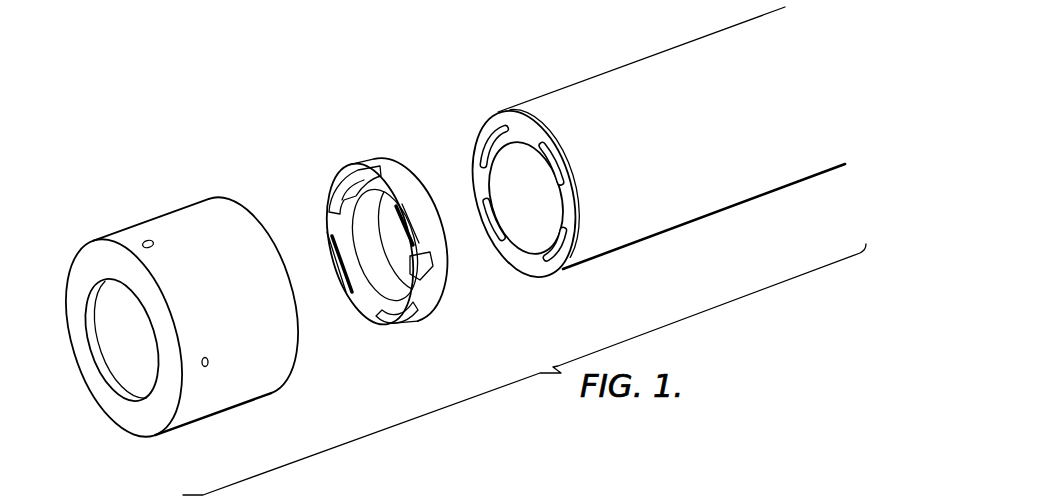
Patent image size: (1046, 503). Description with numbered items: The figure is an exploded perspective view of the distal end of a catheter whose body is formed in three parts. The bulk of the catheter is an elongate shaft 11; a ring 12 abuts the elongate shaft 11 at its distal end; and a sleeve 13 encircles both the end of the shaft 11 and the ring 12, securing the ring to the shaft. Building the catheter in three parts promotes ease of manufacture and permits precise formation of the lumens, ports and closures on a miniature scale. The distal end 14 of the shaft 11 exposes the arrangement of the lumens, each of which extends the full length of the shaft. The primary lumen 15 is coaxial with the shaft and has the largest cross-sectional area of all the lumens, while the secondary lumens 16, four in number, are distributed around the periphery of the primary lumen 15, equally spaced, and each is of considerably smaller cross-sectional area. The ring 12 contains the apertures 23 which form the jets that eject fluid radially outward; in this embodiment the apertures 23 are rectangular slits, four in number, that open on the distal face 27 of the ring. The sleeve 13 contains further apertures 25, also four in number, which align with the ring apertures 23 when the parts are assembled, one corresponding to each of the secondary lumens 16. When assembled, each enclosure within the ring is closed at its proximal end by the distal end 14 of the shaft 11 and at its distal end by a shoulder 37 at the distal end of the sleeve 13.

The elongate shaft 11 is at (524, 251).
The ring 12 is at (402, 242).
The sleeve 13 is at (171, 322).
The distal end of the shaft 14 is at (557, 203).
The primary lumen 15 is at (525, 222).
The secondary lumens 16 is at (557, 260).
The apertures 23 is at (430, 262).
The sleeve apertures 25 is at (207, 363).
The distal face 27 is at (393, 328).
The shoulder 37 is at (140, 420).